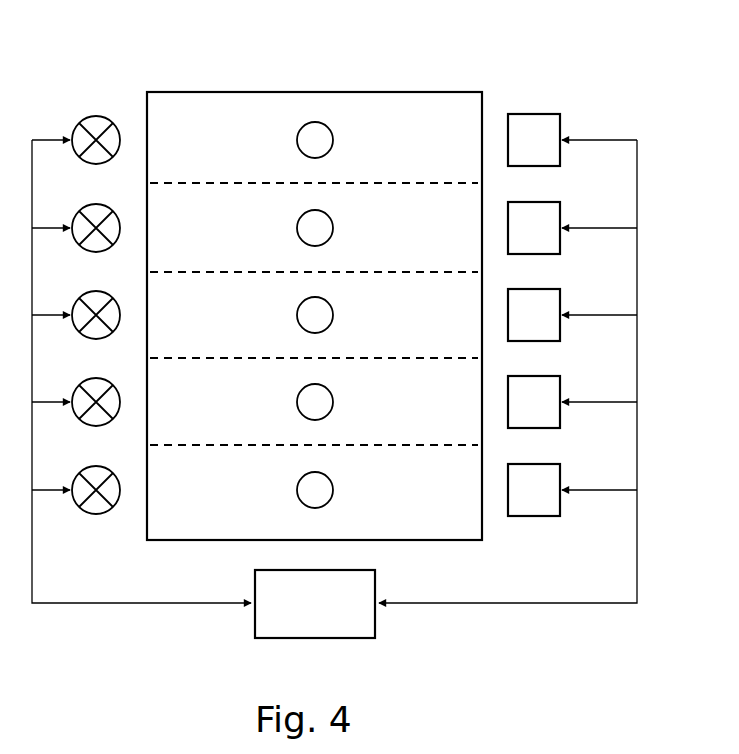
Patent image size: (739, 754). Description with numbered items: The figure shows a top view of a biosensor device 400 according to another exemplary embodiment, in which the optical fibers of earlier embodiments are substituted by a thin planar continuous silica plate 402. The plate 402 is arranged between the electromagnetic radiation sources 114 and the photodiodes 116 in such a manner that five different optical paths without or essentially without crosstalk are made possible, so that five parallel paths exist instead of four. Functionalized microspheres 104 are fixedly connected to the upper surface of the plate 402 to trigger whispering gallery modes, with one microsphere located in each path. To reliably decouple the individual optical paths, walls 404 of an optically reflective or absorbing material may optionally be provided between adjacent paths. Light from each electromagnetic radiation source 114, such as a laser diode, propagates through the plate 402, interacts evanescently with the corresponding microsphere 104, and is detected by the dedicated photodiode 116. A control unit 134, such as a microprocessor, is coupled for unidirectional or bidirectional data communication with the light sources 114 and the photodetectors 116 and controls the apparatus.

The biosensor device 400 is at (620, 43).
The thin planar continuous silica plate 402 is at (424, 92).
The walls 404 is at (383, 181).
The functionalized microspheres 104 is at (293, 138).
The electromagnetic radiation source 114 is at (88, 118).
The electromagnetic radiation detector 116 is at (553, 152).
The control unit 134 is at (338, 632).